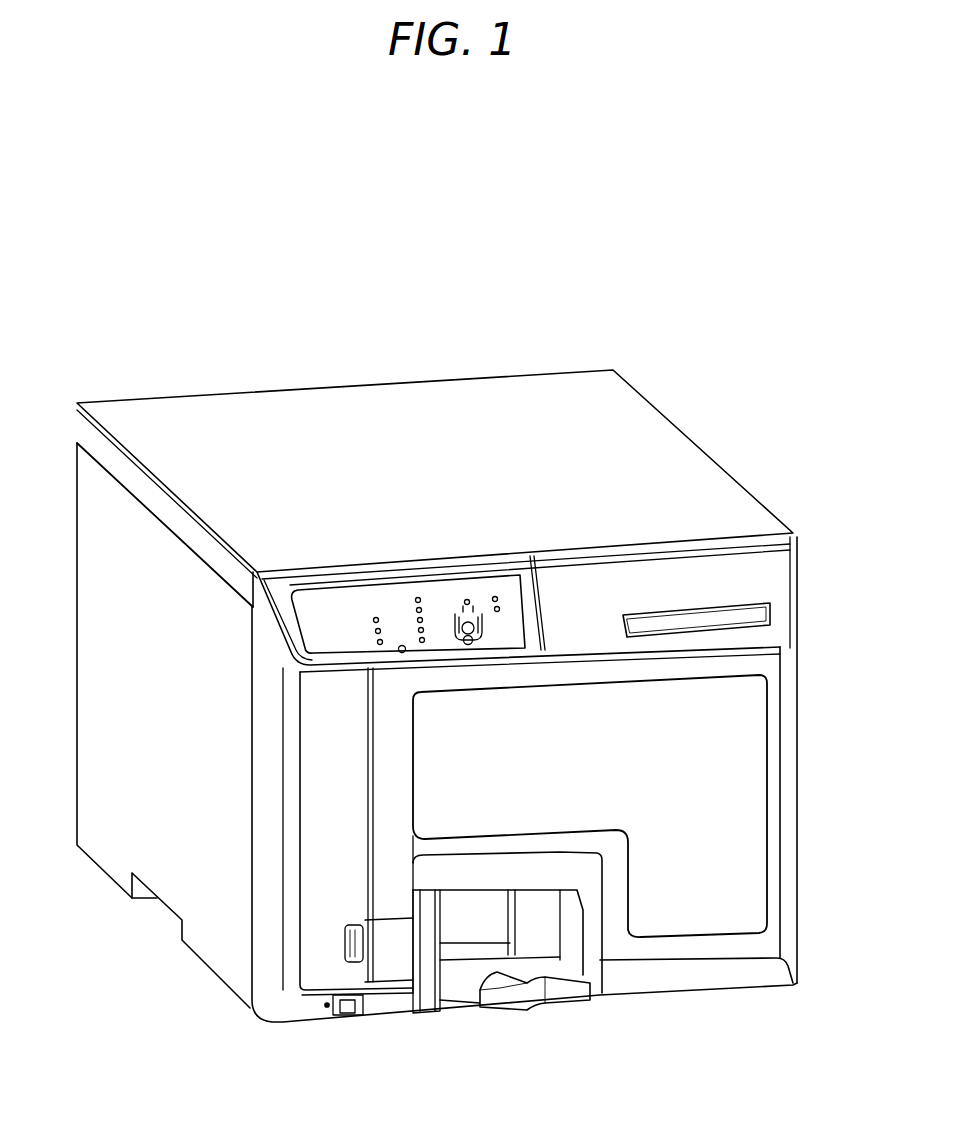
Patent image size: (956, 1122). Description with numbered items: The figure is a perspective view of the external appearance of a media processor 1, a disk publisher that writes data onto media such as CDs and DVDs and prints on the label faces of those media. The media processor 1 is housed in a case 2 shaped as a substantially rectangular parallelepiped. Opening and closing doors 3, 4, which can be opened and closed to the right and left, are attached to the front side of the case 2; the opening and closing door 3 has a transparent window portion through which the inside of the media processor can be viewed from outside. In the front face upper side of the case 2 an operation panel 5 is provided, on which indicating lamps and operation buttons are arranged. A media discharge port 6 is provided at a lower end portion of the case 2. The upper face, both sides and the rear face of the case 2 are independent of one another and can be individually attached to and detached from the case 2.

The media processor 1 is at (489, 342).
The case 2 is at (271, 406).
The opening and closing door 3 is at (750, 707).
The opening and closing door 4 is at (321, 889).
The operation panel 5 is at (334, 603).
The media discharge port 6 is at (540, 975).